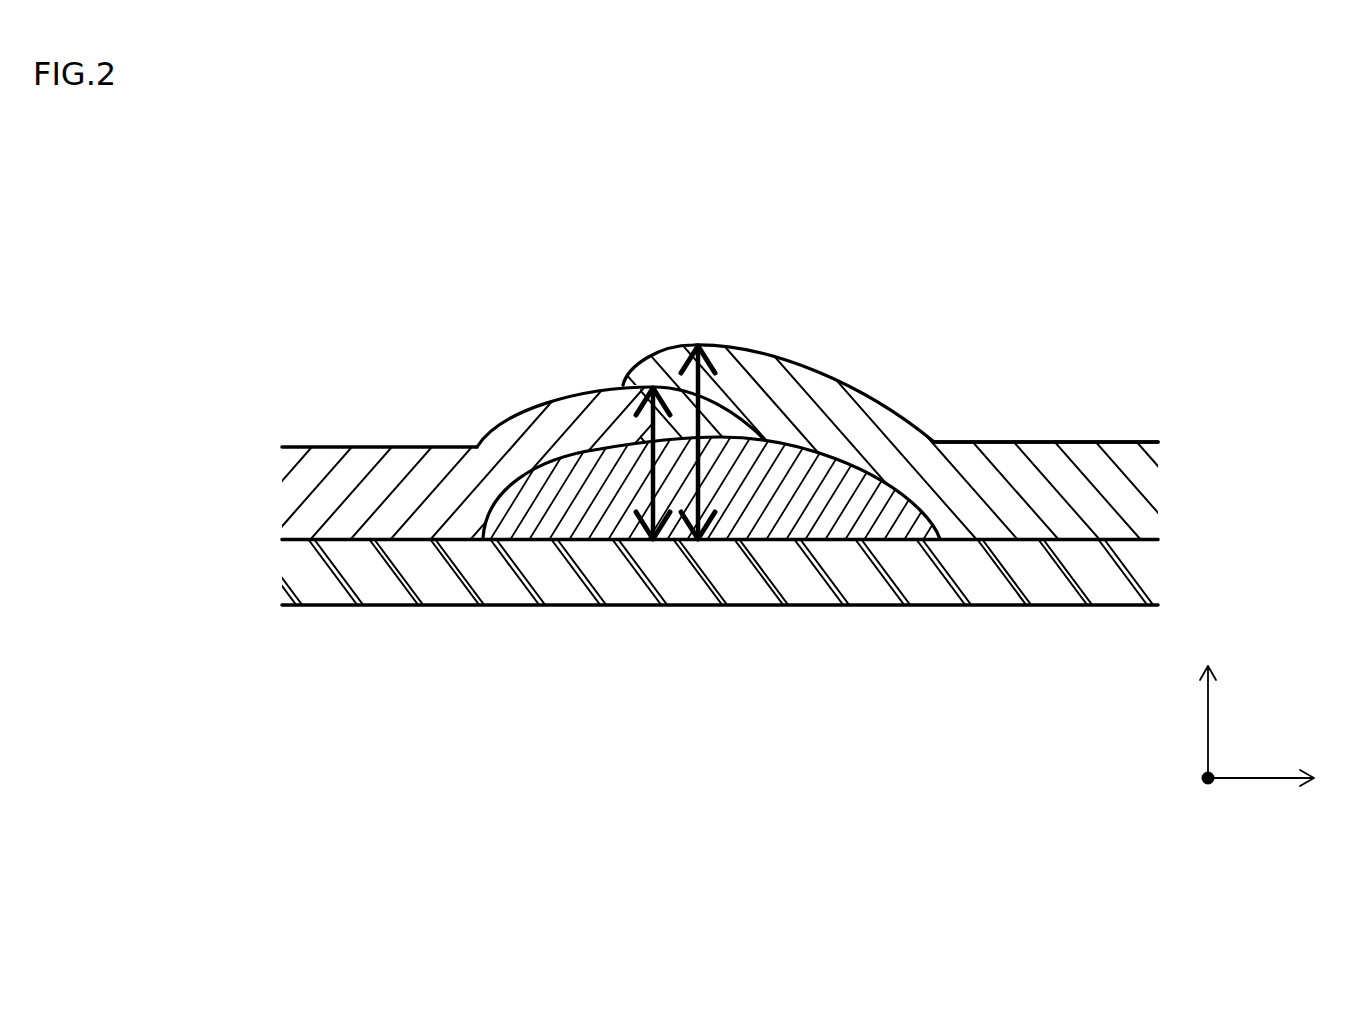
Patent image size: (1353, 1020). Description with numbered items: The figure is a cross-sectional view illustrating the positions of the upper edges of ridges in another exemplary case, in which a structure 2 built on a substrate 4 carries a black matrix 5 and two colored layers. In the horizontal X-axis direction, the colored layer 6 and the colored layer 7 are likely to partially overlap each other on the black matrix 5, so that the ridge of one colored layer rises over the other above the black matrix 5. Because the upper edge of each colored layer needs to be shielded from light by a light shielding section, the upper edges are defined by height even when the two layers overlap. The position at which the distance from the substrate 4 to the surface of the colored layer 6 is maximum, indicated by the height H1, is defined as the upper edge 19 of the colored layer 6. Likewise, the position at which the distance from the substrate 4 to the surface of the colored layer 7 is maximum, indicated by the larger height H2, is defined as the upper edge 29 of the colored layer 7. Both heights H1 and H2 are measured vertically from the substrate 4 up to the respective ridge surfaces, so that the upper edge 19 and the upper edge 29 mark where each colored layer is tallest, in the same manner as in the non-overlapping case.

The display device 2 is at (322, 445).
The substrate 4 is at (683, 607).
The black matrix 5 is at (793, 520).
The colored layer 6 is at (383, 447).
The colored layer 7 is at (1050, 442).
The upper edge 19 is at (630, 385).
The upper edge 29 is at (693, 347).
The maximum distance from the substrate to the surface of the colored layer 6 H1 is at (648, 456).
The maximum distance from the substrate to the surface of the colored layer 7 H2 is at (703, 416).